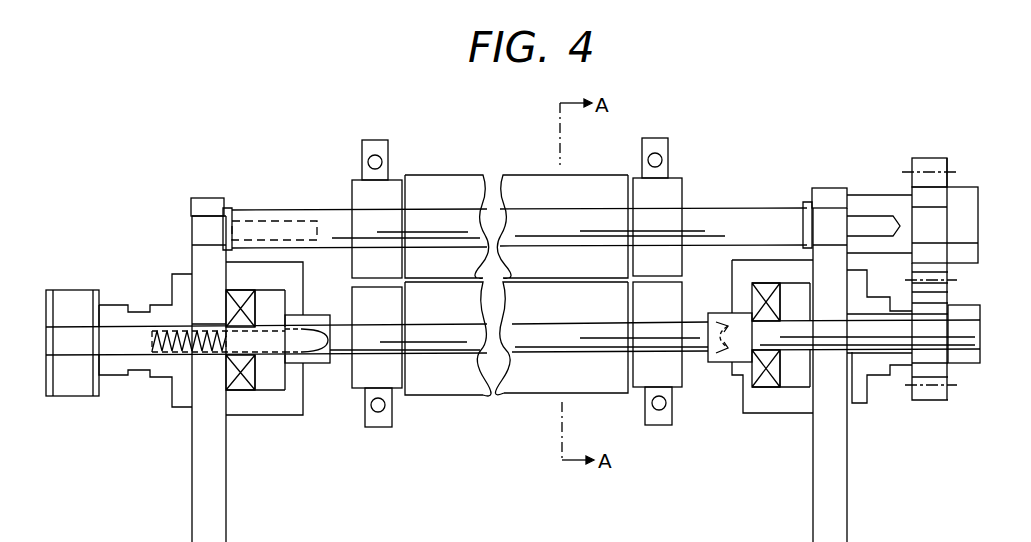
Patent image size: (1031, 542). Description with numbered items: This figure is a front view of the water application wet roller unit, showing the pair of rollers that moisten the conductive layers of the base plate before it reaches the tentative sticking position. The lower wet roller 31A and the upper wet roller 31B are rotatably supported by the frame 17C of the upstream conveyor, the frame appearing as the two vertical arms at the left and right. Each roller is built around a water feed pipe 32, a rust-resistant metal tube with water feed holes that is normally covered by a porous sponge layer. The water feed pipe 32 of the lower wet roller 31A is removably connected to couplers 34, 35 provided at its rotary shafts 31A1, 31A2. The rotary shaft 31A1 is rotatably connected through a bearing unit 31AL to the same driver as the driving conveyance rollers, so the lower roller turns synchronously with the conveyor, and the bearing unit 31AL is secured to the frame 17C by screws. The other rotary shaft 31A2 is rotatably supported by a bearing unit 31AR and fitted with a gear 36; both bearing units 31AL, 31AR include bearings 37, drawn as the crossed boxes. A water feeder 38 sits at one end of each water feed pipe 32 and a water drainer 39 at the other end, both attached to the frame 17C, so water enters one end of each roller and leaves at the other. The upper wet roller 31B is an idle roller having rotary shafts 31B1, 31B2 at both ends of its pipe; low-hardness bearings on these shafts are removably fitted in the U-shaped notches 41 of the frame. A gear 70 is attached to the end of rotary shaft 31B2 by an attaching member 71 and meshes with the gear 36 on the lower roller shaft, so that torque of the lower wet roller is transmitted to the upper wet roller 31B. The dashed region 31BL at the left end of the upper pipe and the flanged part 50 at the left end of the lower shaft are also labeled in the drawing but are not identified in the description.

The frame 17C is at (200, 500).
The lower wet roller 31A is at (531, 378).
The rotary shaft 31A1 is at (115, 332).
The rotary shaft 31A2 is at (880, 343).
The bearing unit 31AL is at (280, 405).
The bearing unit 31AR is at (780, 405).
The upper wet roller 31B is at (520, 190).
The rotary shaft 31B1 is at (198, 228).
The rotary shaft 31B2 is at (873, 220).
The left end bore of upper shaft 31BL is at (282, 222).
The water feed pipe 32 is at (334, 228).
The coupler 34 is at (311, 362).
The coupler 35 is at (733, 348).
The gear 36 is at (934, 304).
The bearings 37 is at (240, 393).
The water feeder 38 is at (392, 192).
The water drainer 39 is at (672, 197).
The U-shaped notches 41 is at (212, 204).
The flange 50 is at (70, 298).
The gear 70 is at (937, 165).
The attaching member 71 is at (967, 220).